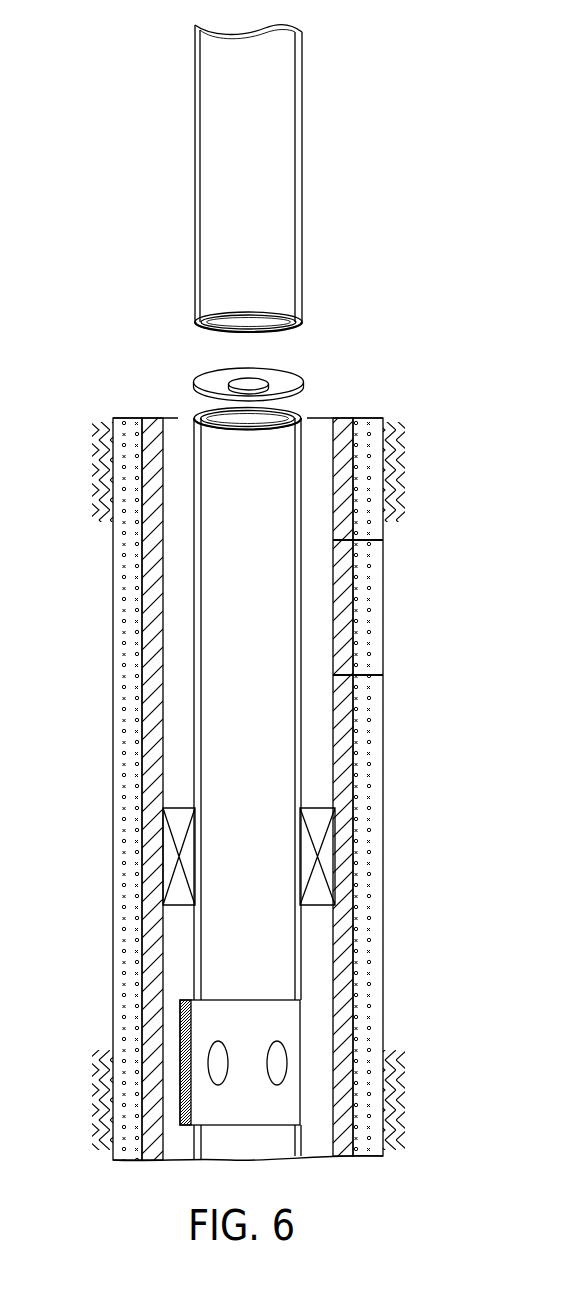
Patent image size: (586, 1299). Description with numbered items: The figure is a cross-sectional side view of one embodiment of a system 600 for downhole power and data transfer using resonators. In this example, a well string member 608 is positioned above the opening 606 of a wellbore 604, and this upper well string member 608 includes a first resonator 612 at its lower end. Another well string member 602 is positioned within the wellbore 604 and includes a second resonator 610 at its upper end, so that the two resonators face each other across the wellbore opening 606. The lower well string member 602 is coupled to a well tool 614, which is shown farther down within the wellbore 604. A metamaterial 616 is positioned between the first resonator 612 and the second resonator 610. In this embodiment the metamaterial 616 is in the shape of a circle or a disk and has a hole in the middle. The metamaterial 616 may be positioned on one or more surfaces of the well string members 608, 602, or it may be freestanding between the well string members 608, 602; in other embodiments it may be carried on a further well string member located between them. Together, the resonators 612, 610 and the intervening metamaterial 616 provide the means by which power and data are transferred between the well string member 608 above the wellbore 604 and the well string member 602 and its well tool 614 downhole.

The system 600 is at (477, 66).
The well string member 602 is at (300, 645).
The wellbore 604 is at (165, 690).
The opening 606 is at (306, 411).
The well string member 608 is at (193, 182).
The second resonator 610 is at (205, 413).
The first resonator 612 is at (282, 318).
The well tool 614 is at (300, 1013).
The metamaterial 616 is at (200, 386).